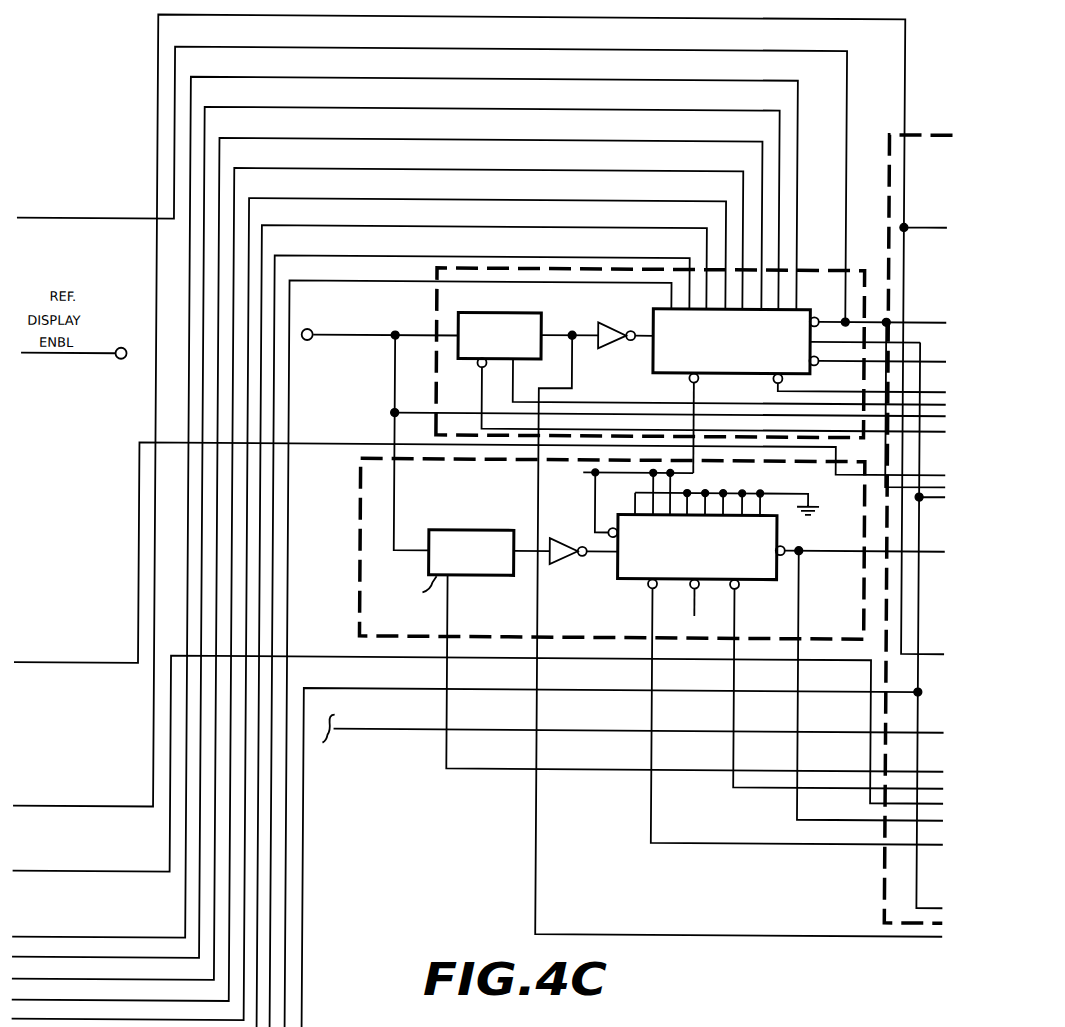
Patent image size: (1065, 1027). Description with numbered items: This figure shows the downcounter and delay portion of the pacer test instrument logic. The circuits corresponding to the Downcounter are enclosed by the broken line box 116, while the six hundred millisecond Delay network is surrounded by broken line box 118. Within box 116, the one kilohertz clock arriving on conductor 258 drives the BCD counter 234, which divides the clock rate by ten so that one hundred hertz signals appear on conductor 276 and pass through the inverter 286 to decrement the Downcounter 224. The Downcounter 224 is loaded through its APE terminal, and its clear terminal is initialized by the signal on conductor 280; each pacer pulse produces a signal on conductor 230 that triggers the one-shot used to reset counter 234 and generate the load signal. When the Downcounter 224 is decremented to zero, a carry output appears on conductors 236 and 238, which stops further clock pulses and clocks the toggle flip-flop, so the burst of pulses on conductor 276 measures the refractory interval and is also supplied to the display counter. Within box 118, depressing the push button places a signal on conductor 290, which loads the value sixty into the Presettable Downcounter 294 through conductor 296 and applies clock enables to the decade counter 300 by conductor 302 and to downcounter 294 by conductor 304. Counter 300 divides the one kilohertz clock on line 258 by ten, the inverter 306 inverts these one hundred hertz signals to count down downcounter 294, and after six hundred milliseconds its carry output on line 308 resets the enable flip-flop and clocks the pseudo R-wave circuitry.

The conductor 230 is at (155, 23).
The conductor 280 is at (844, 97).
The conductor 258 is at (348, 340).
The broken line box 116 is at (434, 388).
The BCD counter 234 is at (540, 313).
The inverter 286 is at (612, 350).
The Downcounter 224 is at (686, 376).
The broken line box 118 is at (360, 497).
The decade counter 300 is at (443, 573).
The inverter 306 is at (572, 566).
The Presettable Downcounter 294 is at (613, 580).
The conductor 296 is at (756, 602).
The line 308 is at (826, 572).
The conductor 238 is at (330, 690).
The conductor 290 is at (632, 746).
The conductor 302 is at (472, 771).
The conductor 304 is at (653, 812).
The conductor 276 is at (538, 897).
The conductor 236 is at (918, 872).